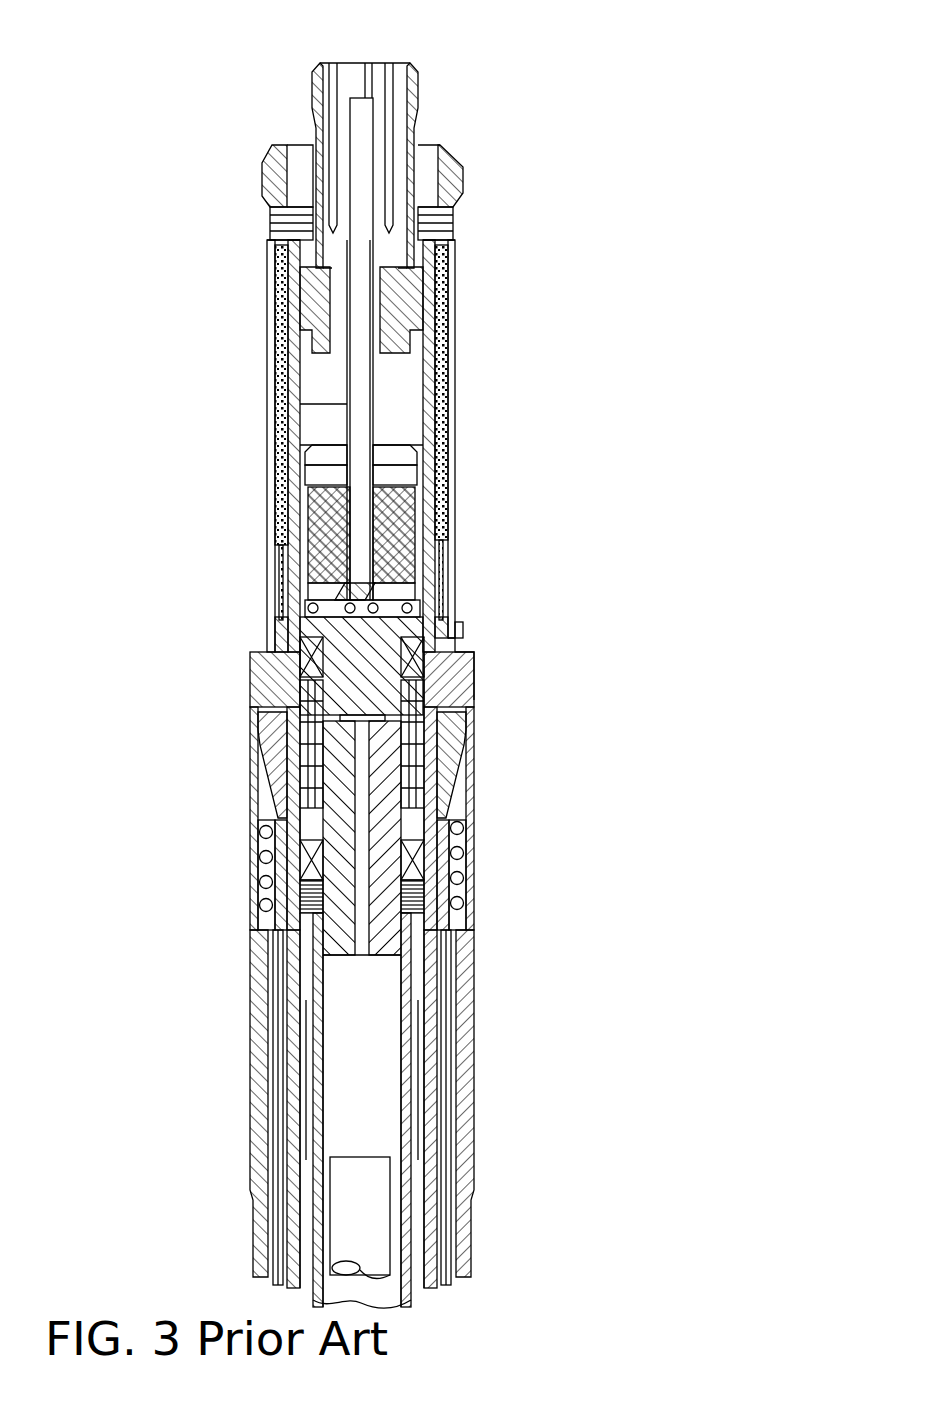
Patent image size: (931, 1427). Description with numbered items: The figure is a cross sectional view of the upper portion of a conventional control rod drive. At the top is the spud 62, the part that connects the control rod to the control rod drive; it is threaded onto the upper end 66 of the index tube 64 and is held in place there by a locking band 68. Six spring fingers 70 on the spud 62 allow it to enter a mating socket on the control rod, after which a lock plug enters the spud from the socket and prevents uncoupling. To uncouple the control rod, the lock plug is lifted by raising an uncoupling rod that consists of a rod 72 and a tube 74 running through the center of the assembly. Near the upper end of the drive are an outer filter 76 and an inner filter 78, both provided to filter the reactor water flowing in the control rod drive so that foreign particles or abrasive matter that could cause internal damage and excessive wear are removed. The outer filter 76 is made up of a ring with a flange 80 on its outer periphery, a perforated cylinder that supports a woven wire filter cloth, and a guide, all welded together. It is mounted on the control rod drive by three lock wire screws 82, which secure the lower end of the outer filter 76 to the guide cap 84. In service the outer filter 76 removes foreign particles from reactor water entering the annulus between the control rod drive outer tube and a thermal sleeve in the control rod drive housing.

The spud 62 is at (308, 117).
The index tube 64 is at (465, 872).
The upper end of the index tube 66 is at (443, 300).
The locking band 68 is at (453, 268).
The spring fingers 70 is at (377, 63).
The rod 72 is at (360, 142).
The tube 74 is at (300, 404).
The outer filter 76 is at (402, 313).
The inner filter 78 is at (443, 518).
The flange 80 is at (460, 188).
The lock wire screws 82 is at (463, 623).
The guide cap 84 is at (462, 652).